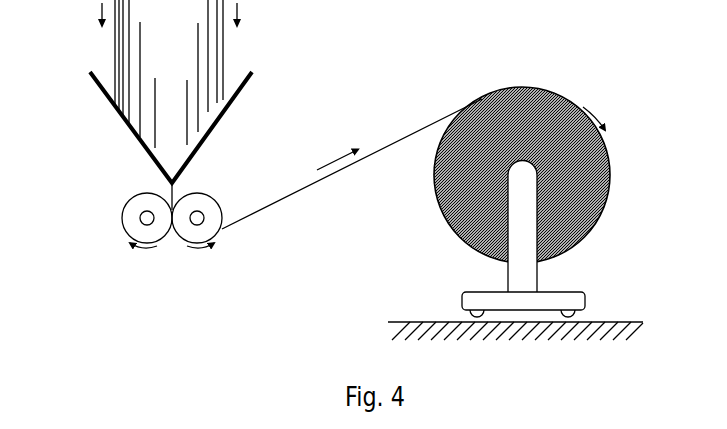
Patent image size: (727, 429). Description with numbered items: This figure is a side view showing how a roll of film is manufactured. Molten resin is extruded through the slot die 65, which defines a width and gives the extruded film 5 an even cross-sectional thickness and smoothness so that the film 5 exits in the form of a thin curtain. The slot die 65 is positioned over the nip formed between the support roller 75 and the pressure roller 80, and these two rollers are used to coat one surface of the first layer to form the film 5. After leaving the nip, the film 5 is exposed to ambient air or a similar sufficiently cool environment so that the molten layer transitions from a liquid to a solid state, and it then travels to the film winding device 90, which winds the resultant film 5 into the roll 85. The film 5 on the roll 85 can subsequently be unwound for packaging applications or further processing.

The film 5 is at (405, 137).
The slot die 65 is at (227, 50).
The support roller 75 is at (123, 204).
The pressure roller 80 is at (216, 203).
The roll 85 is at (543, 92).
The film winding device 90 is at (532, 273).